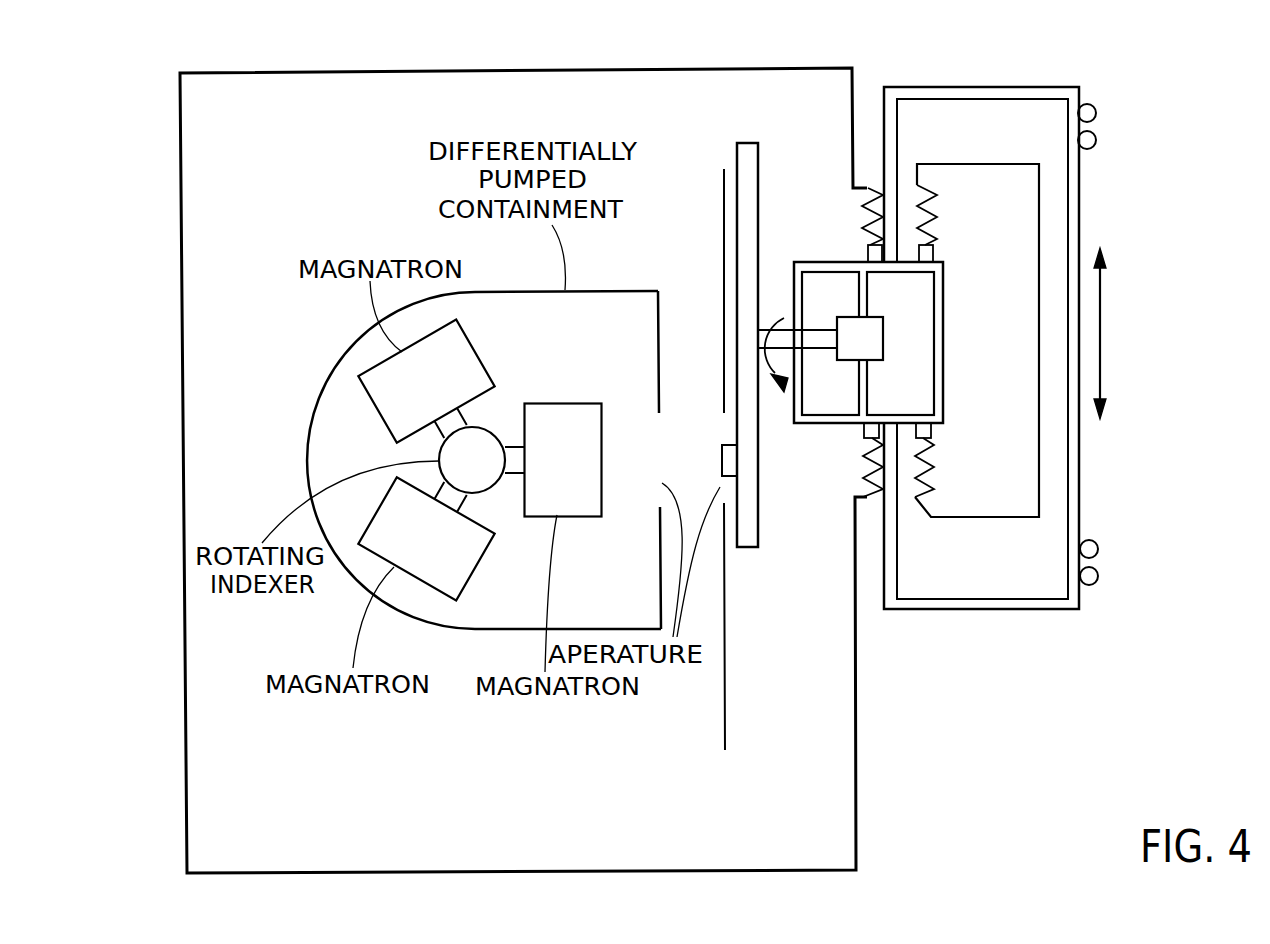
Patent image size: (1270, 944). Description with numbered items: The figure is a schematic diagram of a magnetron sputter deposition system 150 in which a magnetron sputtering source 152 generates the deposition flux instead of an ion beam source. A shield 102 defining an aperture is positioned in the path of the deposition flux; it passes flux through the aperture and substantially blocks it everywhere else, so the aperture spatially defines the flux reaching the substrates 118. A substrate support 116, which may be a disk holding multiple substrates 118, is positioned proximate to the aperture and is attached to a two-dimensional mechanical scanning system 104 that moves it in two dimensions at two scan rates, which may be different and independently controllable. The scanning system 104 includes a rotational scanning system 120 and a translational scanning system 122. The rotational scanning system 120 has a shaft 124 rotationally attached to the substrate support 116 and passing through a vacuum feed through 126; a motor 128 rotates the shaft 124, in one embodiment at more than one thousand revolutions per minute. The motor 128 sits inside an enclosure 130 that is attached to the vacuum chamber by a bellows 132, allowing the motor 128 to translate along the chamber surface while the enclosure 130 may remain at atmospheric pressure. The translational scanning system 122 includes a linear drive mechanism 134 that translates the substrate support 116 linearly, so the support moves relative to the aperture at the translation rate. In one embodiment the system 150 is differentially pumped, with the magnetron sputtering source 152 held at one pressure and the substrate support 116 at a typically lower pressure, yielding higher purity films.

The two-dimensional mechanical scanning system 104 is at (911, 48).
The shield 102 is at (722, 712).
The substrate support 116 is at (736, 214).
The substrates 118 is at (722, 458).
The rotational scanning system 120 is at (836, 261).
The translational scanning system 122 is at (1120, 169).
The shaft 124 is at (763, 330).
The vacuum feed through 126 is at (798, 343).
The motor 128 is at (908, 312).
The enclosure 130 is at (927, 359).
The bellows 132 is at (863, 463).
The linear drive mechanism 134 is at (1096, 583).
The magnetron sputter deposition system 150 is at (968, 758).
The magnetron sputtering source 152 is at (373, 406).